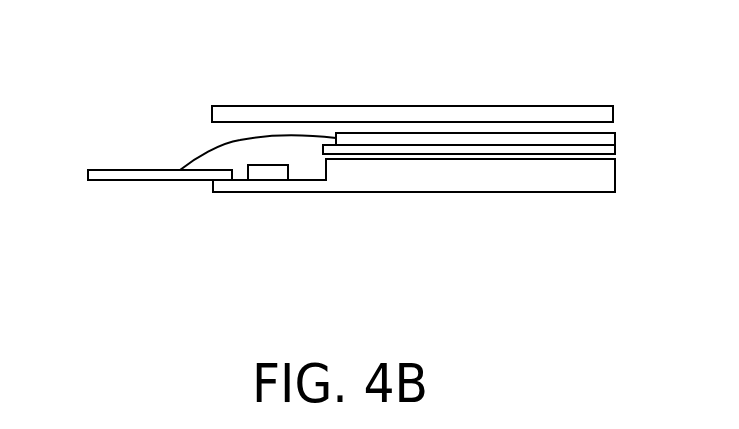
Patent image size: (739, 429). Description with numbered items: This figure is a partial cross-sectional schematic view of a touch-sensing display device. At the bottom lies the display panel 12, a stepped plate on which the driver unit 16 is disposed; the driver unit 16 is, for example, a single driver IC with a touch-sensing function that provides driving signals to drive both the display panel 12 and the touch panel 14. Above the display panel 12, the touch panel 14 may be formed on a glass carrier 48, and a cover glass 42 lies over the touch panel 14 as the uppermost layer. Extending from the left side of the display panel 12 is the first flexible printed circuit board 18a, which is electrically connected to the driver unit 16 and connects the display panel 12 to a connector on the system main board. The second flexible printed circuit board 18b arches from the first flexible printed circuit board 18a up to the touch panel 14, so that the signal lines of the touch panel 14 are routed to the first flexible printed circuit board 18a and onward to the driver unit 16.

The display panel 12 is at (503, 183).
The touch panel 14 is at (472, 142).
The driver unit 16 is at (268, 172).
The first flexible printed circuit board 18a is at (112, 173).
The second flexible printed circuit board 18b is at (205, 158).
The cover glass 42 is at (388, 112).
The glass carrier 48 is at (516, 153).